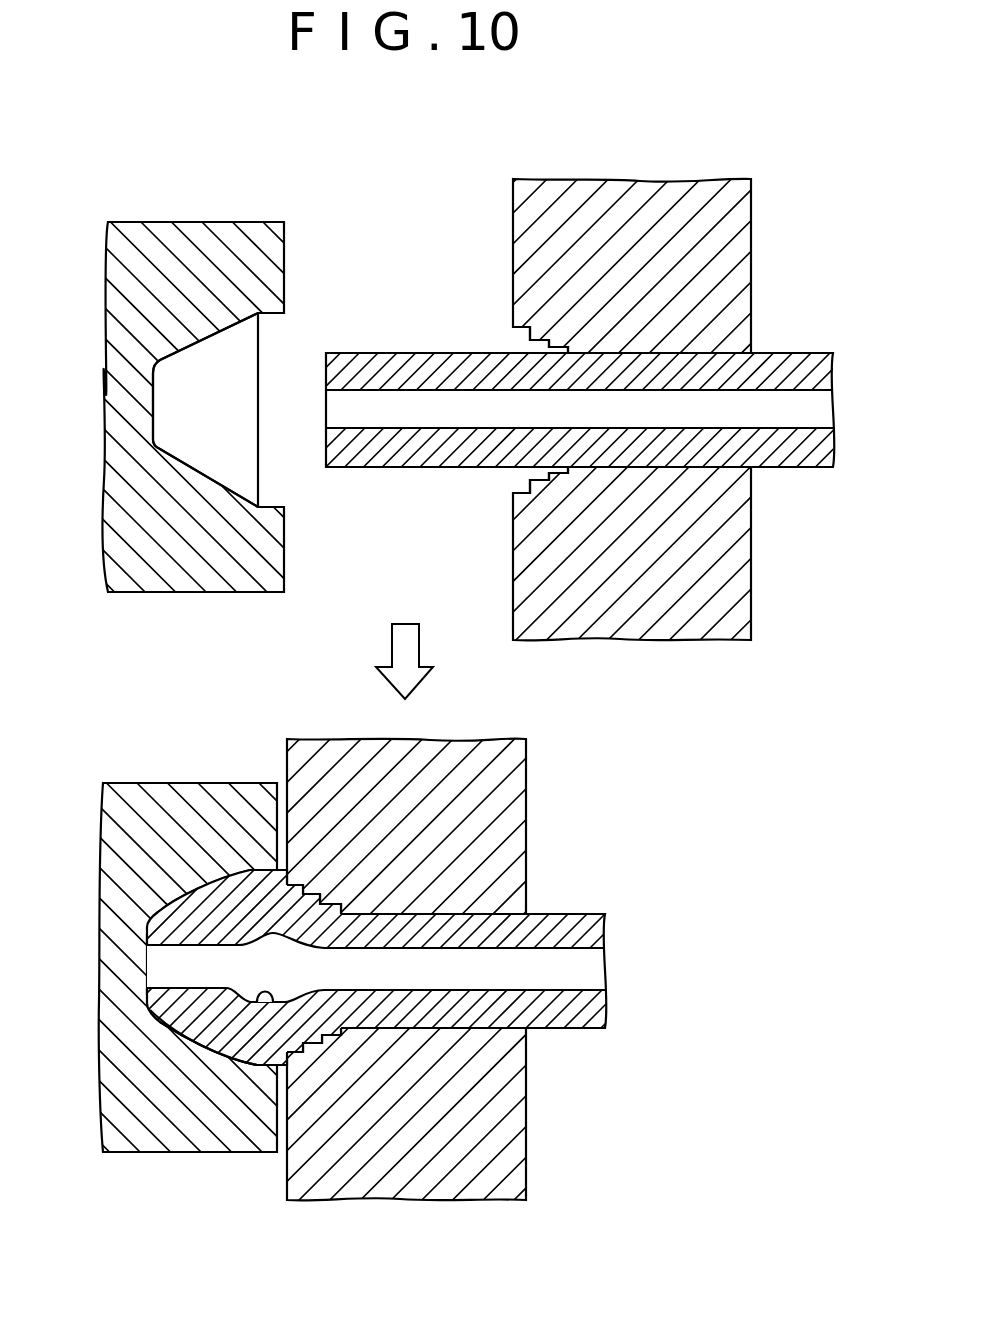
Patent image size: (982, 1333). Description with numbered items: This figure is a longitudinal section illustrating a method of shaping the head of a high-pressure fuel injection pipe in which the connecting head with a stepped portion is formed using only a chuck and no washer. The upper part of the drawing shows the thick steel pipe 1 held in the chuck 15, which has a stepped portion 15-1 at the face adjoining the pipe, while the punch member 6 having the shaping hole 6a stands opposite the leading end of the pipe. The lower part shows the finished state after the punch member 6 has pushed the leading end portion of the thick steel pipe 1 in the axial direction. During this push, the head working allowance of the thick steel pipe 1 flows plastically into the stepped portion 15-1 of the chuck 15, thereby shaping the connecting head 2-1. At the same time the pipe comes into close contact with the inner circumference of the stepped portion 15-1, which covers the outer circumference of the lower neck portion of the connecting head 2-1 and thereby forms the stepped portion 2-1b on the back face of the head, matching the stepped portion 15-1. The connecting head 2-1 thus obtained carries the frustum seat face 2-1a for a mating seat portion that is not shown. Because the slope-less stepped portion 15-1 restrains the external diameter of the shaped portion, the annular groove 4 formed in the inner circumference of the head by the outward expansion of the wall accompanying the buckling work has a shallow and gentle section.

The thick steel pipe 1 is at (357, 353).
The connecting head 2-1 is at (240, 904).
The seat face 2-1a is at (180, 1035).
The stepped portion 2-1b is at (310, 1043).
The annular groove 4 is at (261, 1003).
The punch member 6 is at (160, 258).
The shaping hole 6a is at (220, 490).
The chuck 15 is at (705, 234).
The stepped portion 15-1 is at (504, 339).